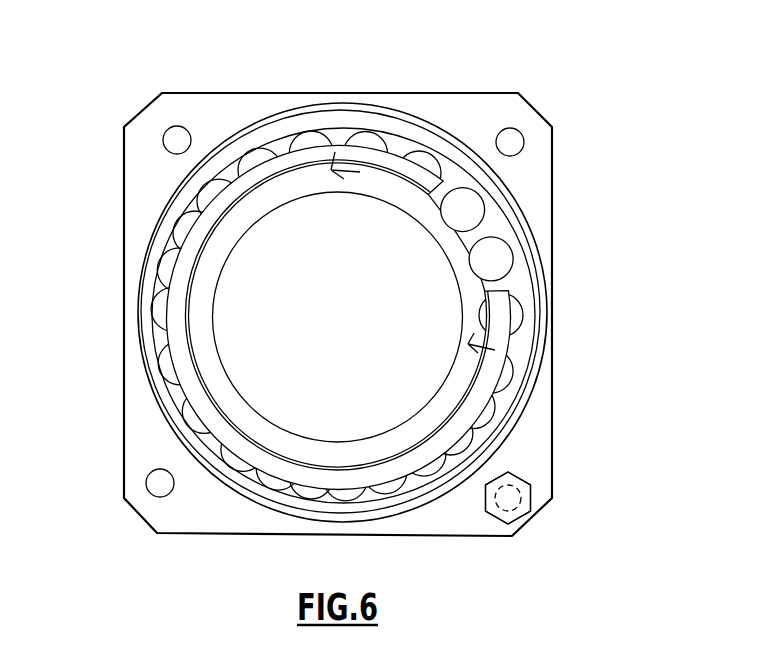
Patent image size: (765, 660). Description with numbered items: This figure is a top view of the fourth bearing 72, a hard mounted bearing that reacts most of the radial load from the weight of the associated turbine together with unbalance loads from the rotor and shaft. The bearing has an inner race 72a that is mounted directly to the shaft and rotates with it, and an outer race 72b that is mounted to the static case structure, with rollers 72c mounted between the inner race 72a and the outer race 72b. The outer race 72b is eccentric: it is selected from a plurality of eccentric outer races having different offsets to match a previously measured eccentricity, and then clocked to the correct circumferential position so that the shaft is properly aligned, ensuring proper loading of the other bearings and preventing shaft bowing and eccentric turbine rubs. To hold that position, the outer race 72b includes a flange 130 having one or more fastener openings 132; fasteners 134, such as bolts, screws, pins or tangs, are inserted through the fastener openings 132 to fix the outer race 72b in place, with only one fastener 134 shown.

The fourth bearing 72 is at (410, 312).
The inner race 72a is at (365, 194).
The outer race 72b is at (520, 205).
The rollers 72c is at (502, 262).
The flange 130 is at (530, 455).
The fastener openings 132 is at (165, 133).
The fasteners 134 is at (503, 525).